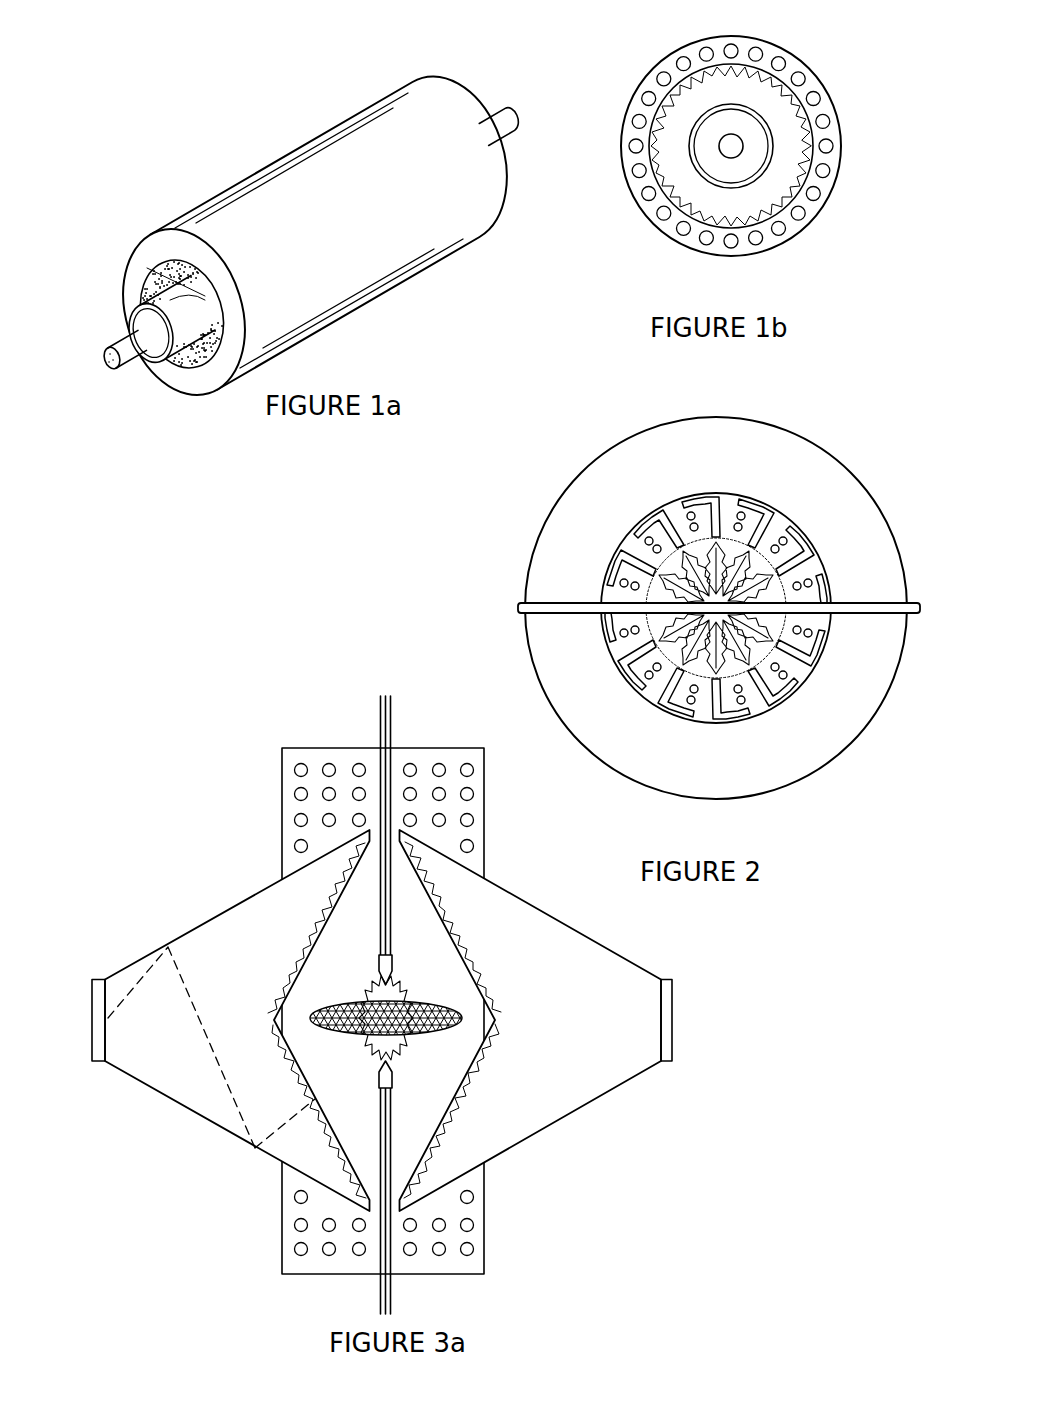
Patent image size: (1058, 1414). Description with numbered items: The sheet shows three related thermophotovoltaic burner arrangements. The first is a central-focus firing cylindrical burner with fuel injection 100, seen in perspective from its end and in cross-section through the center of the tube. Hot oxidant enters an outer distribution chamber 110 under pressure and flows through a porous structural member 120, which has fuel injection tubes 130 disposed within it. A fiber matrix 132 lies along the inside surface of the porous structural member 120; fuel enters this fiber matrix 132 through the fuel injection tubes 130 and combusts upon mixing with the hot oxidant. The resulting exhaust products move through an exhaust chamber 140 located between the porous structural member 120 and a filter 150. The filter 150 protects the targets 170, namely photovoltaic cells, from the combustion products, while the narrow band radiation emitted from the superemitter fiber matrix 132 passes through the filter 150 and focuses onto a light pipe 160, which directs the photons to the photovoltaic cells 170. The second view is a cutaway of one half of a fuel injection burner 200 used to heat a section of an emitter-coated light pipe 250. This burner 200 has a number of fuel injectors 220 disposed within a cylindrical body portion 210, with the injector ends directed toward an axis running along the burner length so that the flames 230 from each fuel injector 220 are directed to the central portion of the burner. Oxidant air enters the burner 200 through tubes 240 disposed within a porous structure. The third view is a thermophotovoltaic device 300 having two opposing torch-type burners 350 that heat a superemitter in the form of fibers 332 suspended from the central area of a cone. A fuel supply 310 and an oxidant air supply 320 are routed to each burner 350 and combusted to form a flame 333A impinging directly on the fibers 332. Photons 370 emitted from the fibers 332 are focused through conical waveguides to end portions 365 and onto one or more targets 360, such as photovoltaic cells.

In FIG. 1a, the central-focus firing cylindrical burner with fuel injection 100 is at (293, 143).
In FIG. 1a, the outer distribution chamber 110 is at (426, 235).
In FIG. 1b, the outer distribution chamber 110 is at (698, 40).
In FIG. 1b, the porous structural member 120 is at (793, 230).
In FIG. 1b, the fuel injection tubes 130 is at (703, 240).
In FIG. 1a, the fiber matrix 132 is at (146, 273).
In FIG. 1b, the fiber matrix 132 is at (660, 182).
In FIG. 1a, the exhaust chamber 140 is at (504, 55).
In FIG. 1a, the filter 150 is at (173, 367).
In FIG. 1b, the filter 150 is at (698, 117).
In FIG. 1a, the light pipe 160 is at (140, 362).
In FIG. 1b, the light pipe 160 is at (731, 146).
In FIG. 1a, the targets 170 is at (111, 365).
In FIG. 1b, the targets 170 is at (735, 138).
In FIG. 2, the fuel injection burner 200 is at (613, 444).
In FIG. 2, the cylindrical body portion 210 is at (554, 507).
In FIG. 2, the fuel injectors 220 is at (697, 678).
In FIG. 2, the flames 230 is at (679, 662).
In FIG. 2, the tubes 240 is at (792, 670).
In FIG. 2, the light pipe 250 is at (541, 602).
In FIG. 3a, the thermophotovoltaic device 300 is at (203, 913).
In FIG. 3a, the fuel supply 310 is at (380, 707).
In FIG. 3a, the oxidant air supply 320 is at (394, 707).
In FIG. 3a, the fibers 332 is at (443, 1029).
In FIG. 3a, the flame 333A is at (408, 1050).
In FIG. 3a, the torch-type burners 350 is at (378, 963).
In FIG. 3a, the targets 360 is at (92, 1001).
In FIG. 3a, the end portions 365 is at (122, 972).
In FIG. 3a, the photons 370 is at (236, 1110).